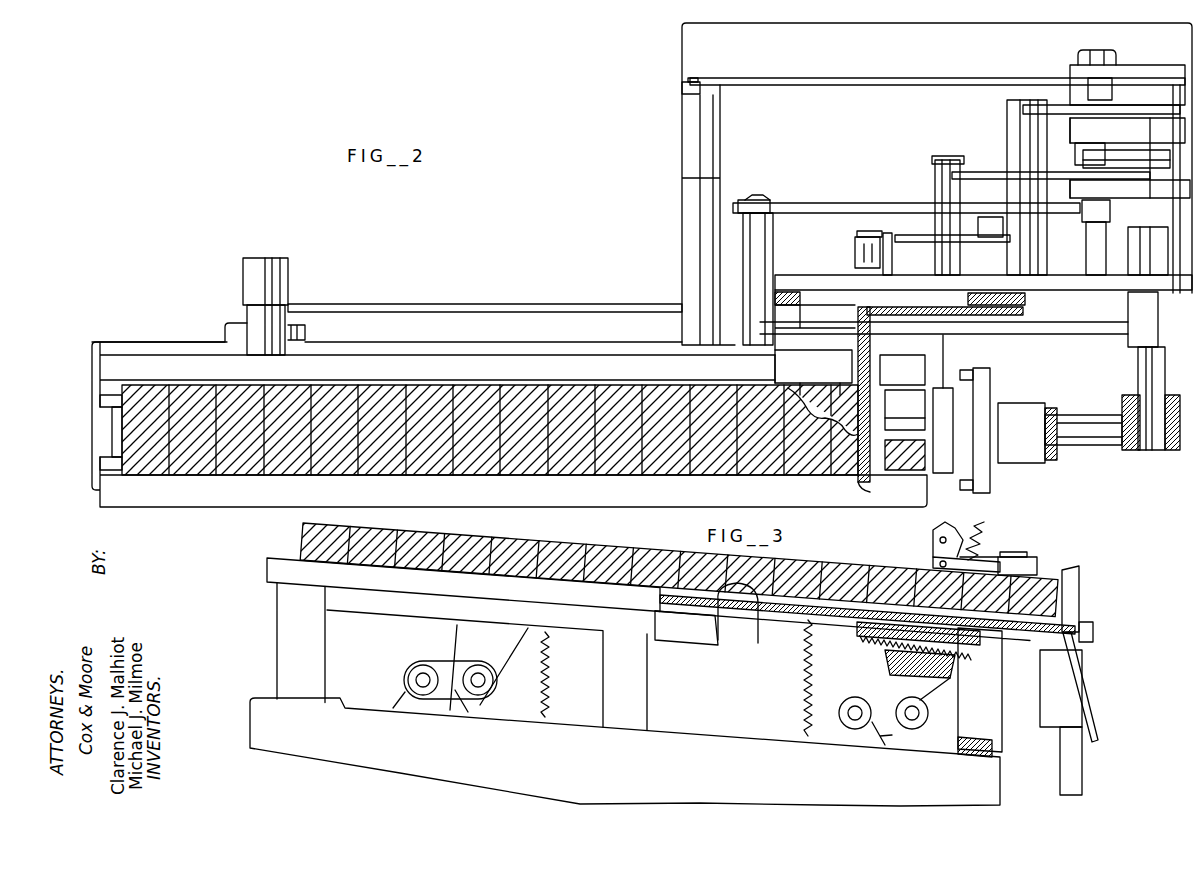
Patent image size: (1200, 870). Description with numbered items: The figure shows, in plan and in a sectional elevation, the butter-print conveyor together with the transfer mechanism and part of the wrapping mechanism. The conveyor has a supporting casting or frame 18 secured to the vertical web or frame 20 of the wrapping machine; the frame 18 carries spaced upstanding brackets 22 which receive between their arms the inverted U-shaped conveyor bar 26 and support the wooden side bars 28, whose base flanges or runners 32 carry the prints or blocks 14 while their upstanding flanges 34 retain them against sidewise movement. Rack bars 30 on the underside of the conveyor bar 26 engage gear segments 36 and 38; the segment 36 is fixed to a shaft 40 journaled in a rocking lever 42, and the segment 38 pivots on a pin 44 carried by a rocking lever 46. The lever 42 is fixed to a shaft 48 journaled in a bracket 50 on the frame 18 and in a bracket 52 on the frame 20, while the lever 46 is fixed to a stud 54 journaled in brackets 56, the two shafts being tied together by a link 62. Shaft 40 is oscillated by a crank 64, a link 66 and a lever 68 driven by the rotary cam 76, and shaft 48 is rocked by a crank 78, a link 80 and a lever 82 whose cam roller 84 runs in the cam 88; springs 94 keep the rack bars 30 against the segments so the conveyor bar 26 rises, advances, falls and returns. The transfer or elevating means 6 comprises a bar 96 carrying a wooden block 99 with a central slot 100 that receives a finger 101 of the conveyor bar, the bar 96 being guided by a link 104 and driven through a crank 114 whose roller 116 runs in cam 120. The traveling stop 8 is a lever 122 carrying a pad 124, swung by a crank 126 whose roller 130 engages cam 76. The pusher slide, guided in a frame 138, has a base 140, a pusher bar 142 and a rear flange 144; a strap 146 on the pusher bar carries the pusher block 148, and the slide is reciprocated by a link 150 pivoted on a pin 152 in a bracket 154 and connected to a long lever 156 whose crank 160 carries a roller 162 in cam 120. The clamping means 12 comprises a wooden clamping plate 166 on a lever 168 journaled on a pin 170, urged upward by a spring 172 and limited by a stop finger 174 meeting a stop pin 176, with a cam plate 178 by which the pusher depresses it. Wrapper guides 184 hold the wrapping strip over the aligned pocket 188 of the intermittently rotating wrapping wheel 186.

In FIG. 3, the transfer or elevating means 6 is at (1046, 758).
In FIG. 3, the traveling stop or abutment means 8 is at (1098, 645).
In FIG. 3, the clamping means 12 is at (1014, 528).
In FIG. 3, the prints or blocks 14 is at (1072, 596).
In FIG. 3, the frame or supporting casting 18 is at (366, 756).
In FIG. 2, the vertical web or frame 20 is at (780, 282).
In FIG. 3, the brackets 22 is at (296, 627).
In FIG. 2, the conveyor bar 26 is at (490, 430).
In FIG. 3, the conveyor bar 26 is at (702, 630).
In FIG. 2, the side bars or strips 28 is at (400, 345).
In FIG. 3, the side bars or strips 28 is at (272, 566).
In FIG. 3, the rack bars 30 is at (860, 645).
In FIG. 2, the base flanges or runners 32 is at (110, 399).
In FIG. 2, the upstanding flanges 34 is at (118, 376).
In FIG. 3, the gear segment 36 is at (898, 681).
In FIG. 3, the gear segment 38 is at (468, 637).
In FIG. 3, the shaft 40 is at (918, 724).
In FIG. 3, the rocking lever 42 is at (892, 739).
In FIG. 3, the pin 44 is at (485, 682).
In FIG. 3, the rocking lever 46 is at (474, 705).
In FIG. 3, the shaft 48 is at (850, 700).
In FIG. 3, the bracket 50 is at (883, 748).
In FIG. 2, the bracket 52 is at (692, 245).
In FIG. 3, the stud or shaft 54 is at (418, 676).
In FIG. 2, the bracket or brackets 56 is at (305, 332).
In FIG. 3, the bracket or brackets 56 is at (400, 700).
In FIG. 2, the link 62 is at (505, 305).
In FIG. 2, the crank 64 is at (766, 212).
In FIG. 2, the link 66 is at (890, 205).
In FIG. 2, the lever or crank 68 is at (1112, 218).
In FIG. 2, the rotary power driven cam 76 is at (1082, 190).
In FIG. 2, the crank 78 is at (682, 94).
In FIG. 2, the link 80 is at (893, 80).
In FIG. 2, the crank or lever 82 is at (1112, 92).
In FIG. 2, the cam roller 84 is at (1110, 60).
In FIG. 2, the rotary power driven cam 88 is at (1135, 73).
In FIG. 3, the springs 94 is at (550, 673).
In FIG. 3, the bar 96 is at (1074, 768).
In FIG. 3, the article engaging block 99 is at (1052, 678).
In FIG. 2, the vertical central opening or slot 100 is at (905, 410).
In FIG. 2, the finger 101 is at (905, 455).
In FIG. 2, the guiding link or lever 104 is at (1112, 330).
In FIG. 2, the crank 114 is at (1122, 158).
In FIG. 2, the cam roller 116 is at (1090, 149).
In FIG. 2, the rotary power driven cam 120 is at (1085, 129).
In FIG. 3, the bar or lever 122 is at (1090, 690).
In FIG. 2, the pad or block 124 is at (944, 395).
In FIG. 3, the pad or block 124 is at (1072, 600).
In FIG. 2, the lever or crank 126 is at (995, 172).
In FIG. 2, the cam roller 130 is at (1165, 190).
In FIG. 2, the frame 138 is at (998, 300).
In FIG. 2, the base 140 is at (1023, 314).
In FIG. 2, the pusher bar 142 is at (862, 310).
In FIG. 2, the rearwardly projecting flange 144 is at (890, 245).
In FIG. 2, the bar or strap 146 is at (868, 490).
In FIG. 2, the pusher block 148 is at (884, 368).
In FIG. 2, the link or lever 150 is at (918, 242).
In FIG. 2, the stud or pin 152 is at (853, 248).
In FIG. 2, the bracket or bearing 154 is at (889, 232).
In FIG. 2, the long lever 156 is at (1000, 218).
In FIG. 2, the crank 160 is at (1062, 100).
In FIG. 2, the cam roller 162 is at (1180, 130).
In FIG. 2, the clamping plate or bar 166 is at (842, 370).
In FIG. 3, the clamping plate or bar 166 is at (1032, 562).
In FIG. 2, the flat bar or lever 168 is at (776, 364).
In FIG. 3, the flat bar or lever 168 is at (990, 556).
In FIG. 3, the pin 170 is at (933, 564).
In FIG. 3, the spring 172 is at (990, 536).
In FIG. 3, the stop finger 174 is at (938, 546).
In FIG. 3, the stop pin 176 is at (935, 530).
In FIG. 3, the cam plate or block 178 is at (1022, 552).
In FIG. 2, the wrapper positioning guides 184 is at (985, 386).
In FIG. 2, the wrapping wheel 186 is at (1070, 420).
In FIG. 2, the receiving pockets 188 is at (1022, 412).